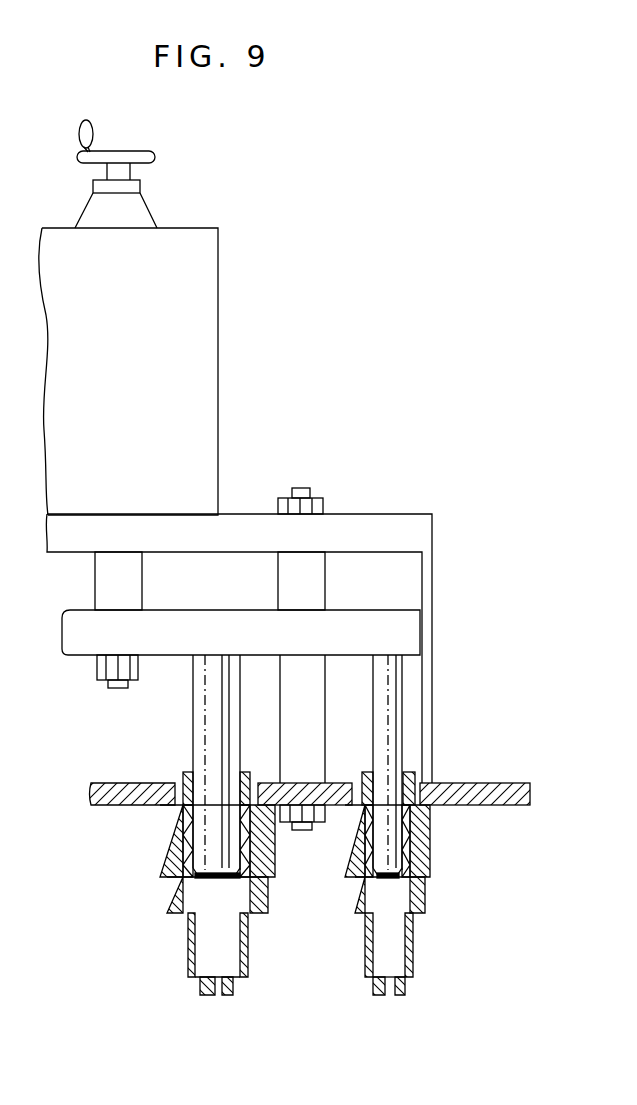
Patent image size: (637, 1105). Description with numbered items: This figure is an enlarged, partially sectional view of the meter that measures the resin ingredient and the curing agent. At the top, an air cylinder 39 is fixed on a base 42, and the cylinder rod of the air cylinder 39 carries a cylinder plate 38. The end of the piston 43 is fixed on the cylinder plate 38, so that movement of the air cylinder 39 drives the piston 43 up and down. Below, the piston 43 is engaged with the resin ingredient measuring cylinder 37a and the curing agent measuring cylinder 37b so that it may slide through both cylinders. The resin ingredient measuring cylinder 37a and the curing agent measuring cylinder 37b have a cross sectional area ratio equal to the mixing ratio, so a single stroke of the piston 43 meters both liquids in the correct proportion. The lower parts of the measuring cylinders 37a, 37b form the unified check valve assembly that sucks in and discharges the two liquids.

The air cylinder 39 is at (218, 338).
The base 42 is at (423, 535).
The cylinder plate 38 is at (413, 632).
The piston 43 is at (397, 710).
The resin ingredient measuring cylinder 37a is at (248, 950).
The curing agent measuring cylinder 37b is at (413, 955).